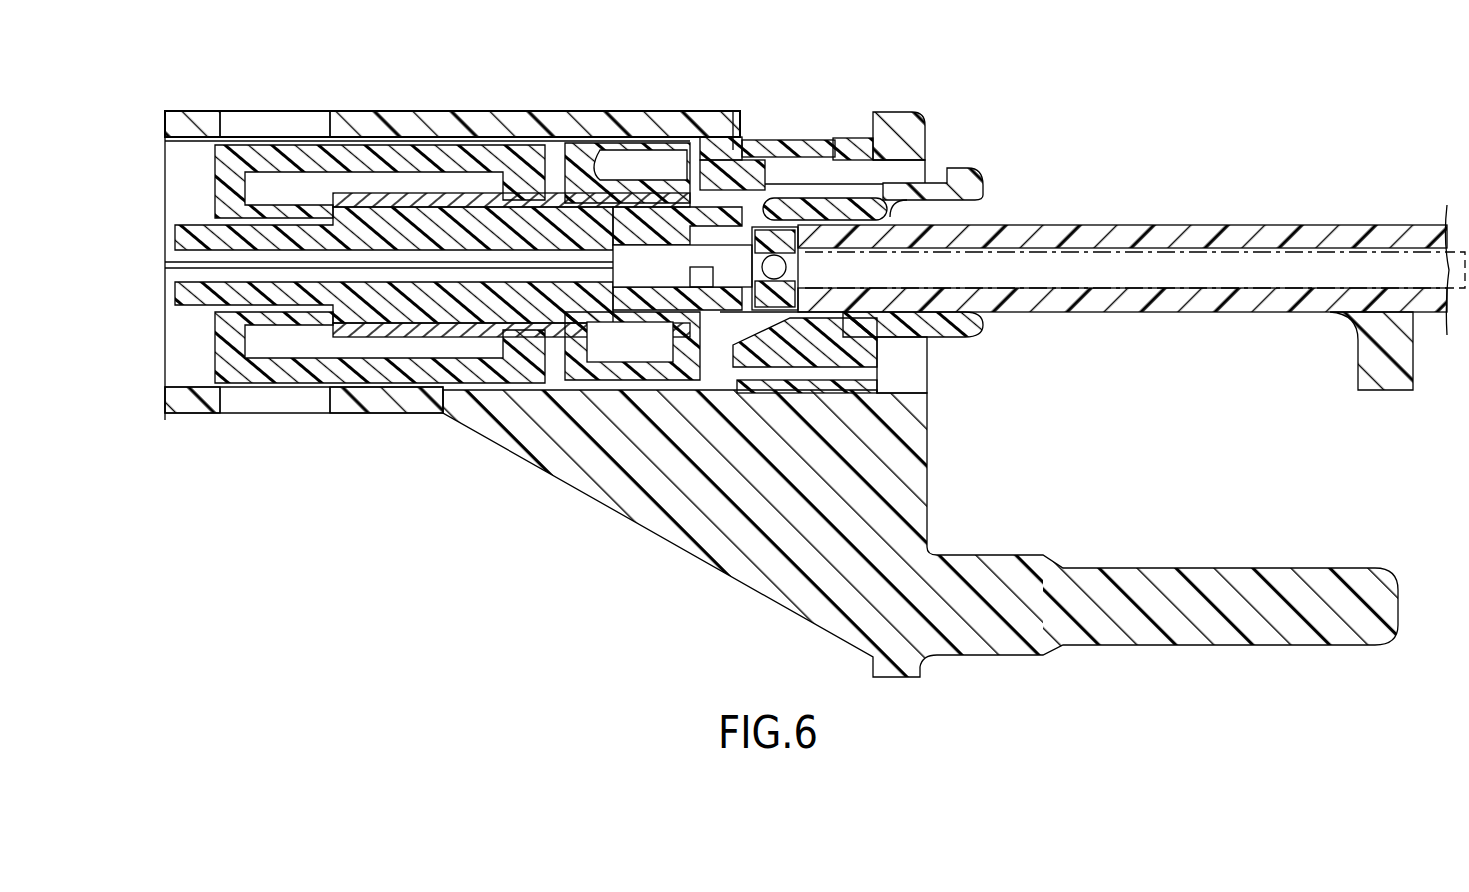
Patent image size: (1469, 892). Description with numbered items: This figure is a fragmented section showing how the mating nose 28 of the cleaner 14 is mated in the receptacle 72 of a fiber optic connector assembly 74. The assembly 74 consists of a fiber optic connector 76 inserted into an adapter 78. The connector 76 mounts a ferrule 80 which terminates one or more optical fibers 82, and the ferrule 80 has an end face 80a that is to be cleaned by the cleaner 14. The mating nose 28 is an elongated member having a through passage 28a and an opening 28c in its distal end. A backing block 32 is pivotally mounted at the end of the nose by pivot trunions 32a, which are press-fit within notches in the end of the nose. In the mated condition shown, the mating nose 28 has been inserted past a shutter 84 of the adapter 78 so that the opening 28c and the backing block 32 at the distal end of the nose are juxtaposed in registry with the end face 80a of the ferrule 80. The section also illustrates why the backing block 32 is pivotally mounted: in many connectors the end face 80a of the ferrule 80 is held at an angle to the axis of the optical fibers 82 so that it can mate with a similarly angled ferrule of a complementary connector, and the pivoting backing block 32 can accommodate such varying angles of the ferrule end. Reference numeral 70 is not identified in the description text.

The cleaner 14 is at (1442, 206).
The mating nose 28 is at (1103, 240).
The through passage 28a is at (1162, 252).
The opening 28c is at (733, 150).
The backing block 32 is at (790, 243).
The pivot trunions 32a is at (787, 266).
The flange 70 is at (1235, 255).
The receptacle 72 is at (953, 305).
The fiber optic connector assembly 74 is at (948, 105).
The fiber optic connector 76 is at (390, 320).
The adapter 78 is at (613, 392).
The ferrule 80 is at (697, 252).
The end face 80a is at (770, 225).
The optical fibers 82 is at (521, 262).
The shutter 84 is at (833, 205).